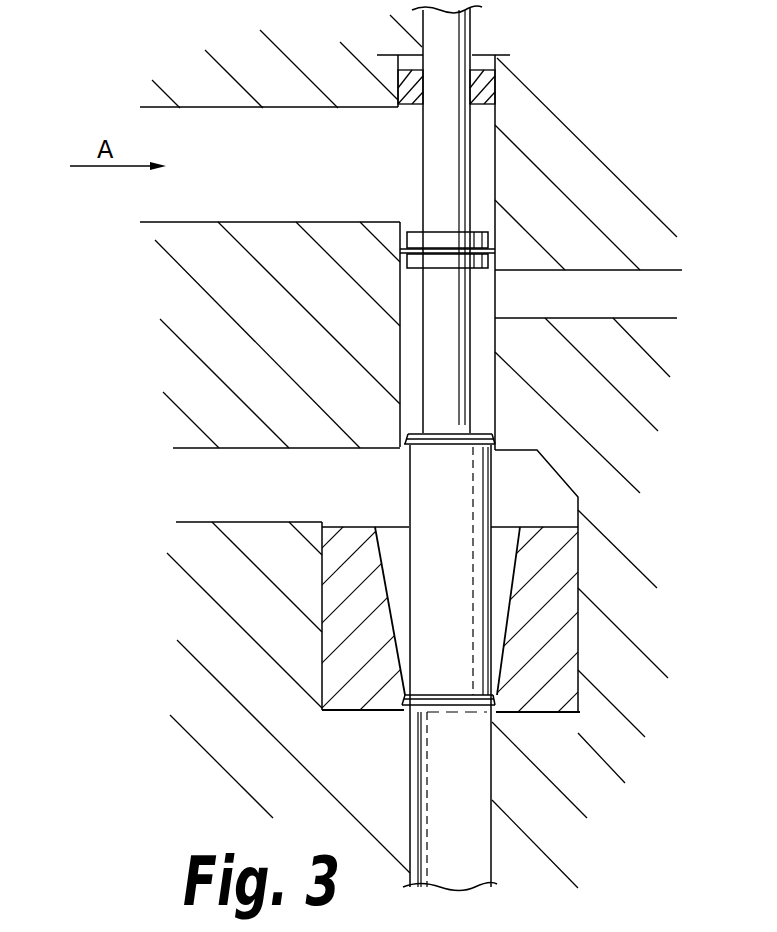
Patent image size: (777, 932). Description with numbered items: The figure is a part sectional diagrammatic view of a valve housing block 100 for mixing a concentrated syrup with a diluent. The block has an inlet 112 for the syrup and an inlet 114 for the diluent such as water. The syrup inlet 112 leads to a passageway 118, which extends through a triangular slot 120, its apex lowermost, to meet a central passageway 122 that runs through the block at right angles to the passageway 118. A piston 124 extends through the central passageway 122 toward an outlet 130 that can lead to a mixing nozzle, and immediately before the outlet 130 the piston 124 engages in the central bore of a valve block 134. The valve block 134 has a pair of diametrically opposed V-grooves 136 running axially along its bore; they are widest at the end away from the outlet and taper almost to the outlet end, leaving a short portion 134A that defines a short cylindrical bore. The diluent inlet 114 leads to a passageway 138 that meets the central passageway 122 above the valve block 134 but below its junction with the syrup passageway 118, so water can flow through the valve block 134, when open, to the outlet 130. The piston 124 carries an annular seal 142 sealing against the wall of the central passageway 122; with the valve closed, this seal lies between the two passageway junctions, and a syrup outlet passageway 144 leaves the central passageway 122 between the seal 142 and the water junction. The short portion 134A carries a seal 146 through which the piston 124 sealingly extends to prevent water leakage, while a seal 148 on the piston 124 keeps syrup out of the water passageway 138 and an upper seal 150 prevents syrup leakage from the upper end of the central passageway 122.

The valve housing block 100 is at (180, 366).
The inlet for concentrated syrup 112 is at (228, 200).
The inlet for diluent 114 is at (193, 502).
The passageway 118 is at (222, 133).
The triangular slot 120 is at (395, 200).
The central passageway 122 is at (487, 385).
The piston 124 is at (440, 351).
The outlet 130 is at (462, 828).
The valve block 134 is at (525, 680).
The short portion 134A is at (493, 700).
The V-grooves 136 is at (392, 581).
The passageway 138 is at (245, 502).
The annular seal 142 is at (489, 249).
The syrup outlet passageway 144 is at (632, 287).
The seal 146 is at (400, 712).
The seal 148 is at (493, 437).
The upper seal 150 is at (487, 92).